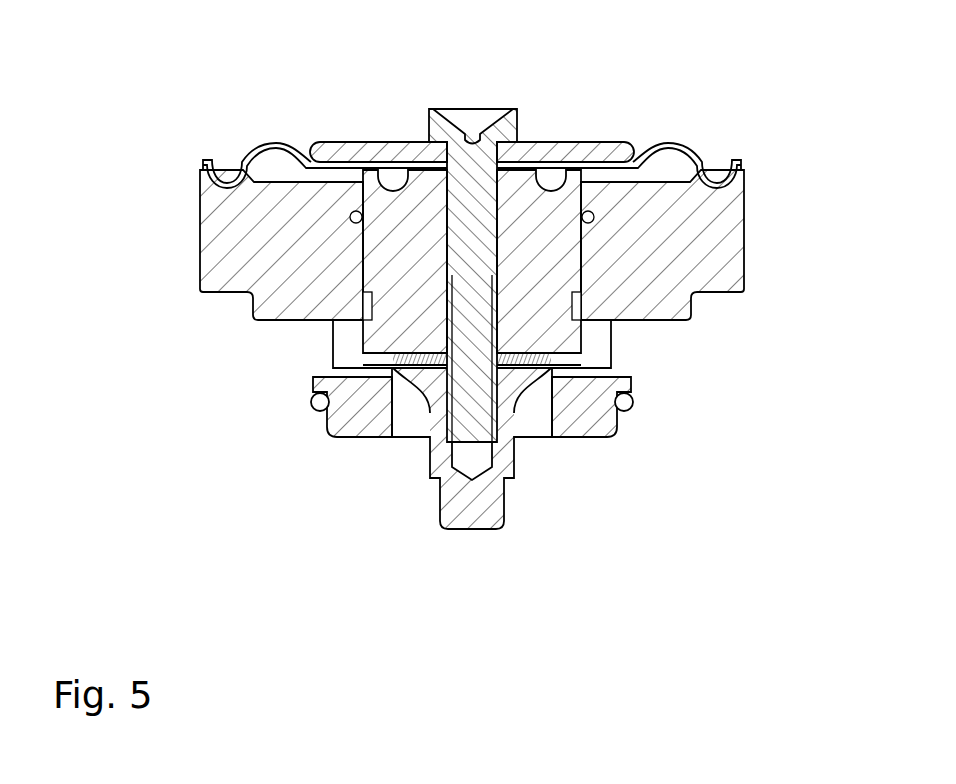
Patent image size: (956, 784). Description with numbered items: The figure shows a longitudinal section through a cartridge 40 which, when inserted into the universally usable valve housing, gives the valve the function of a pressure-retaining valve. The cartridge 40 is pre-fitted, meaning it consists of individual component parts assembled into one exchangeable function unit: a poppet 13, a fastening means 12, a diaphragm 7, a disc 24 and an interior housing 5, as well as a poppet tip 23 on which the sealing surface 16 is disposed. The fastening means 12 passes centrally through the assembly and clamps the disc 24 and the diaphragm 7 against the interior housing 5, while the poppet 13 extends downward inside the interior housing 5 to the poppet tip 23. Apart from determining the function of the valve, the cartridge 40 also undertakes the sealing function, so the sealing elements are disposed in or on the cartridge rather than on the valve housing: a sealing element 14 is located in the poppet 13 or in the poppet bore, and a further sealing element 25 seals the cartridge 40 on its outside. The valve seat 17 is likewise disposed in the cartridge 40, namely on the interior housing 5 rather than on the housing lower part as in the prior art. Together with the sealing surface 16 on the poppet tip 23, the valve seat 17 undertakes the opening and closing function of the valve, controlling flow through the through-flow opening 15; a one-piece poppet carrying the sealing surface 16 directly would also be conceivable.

The cartridge for maintaining pressure 40 is at (467, 313).
The fastening means 12 is at (529, 223).
The disc 24 is at (537, 83).
The diaphragm 7 is at (515, 148).
The sealing element 14 is at (592, 210).
The interior housing 5 is at (514, 245).
The poppet 13 is at (599, 278).
The sealing surface 16 is at (340, 318).
The through-flow opening 15 is at (355, 350).
The valve seat/sealing edge 17 is at (365, 405).
The sealing element 25 is at (573, 429).
The poppet tip 23 is at (505, 495).